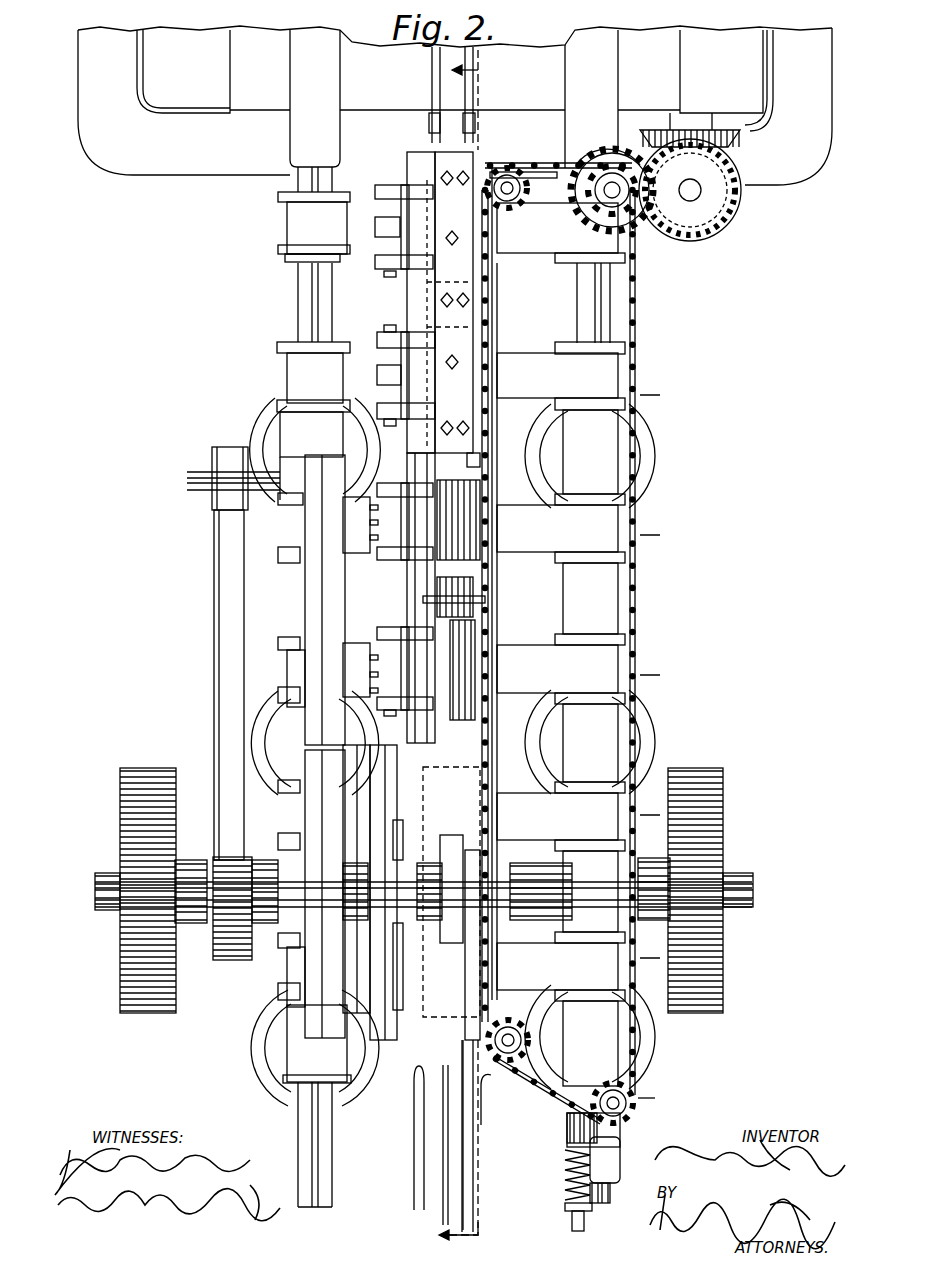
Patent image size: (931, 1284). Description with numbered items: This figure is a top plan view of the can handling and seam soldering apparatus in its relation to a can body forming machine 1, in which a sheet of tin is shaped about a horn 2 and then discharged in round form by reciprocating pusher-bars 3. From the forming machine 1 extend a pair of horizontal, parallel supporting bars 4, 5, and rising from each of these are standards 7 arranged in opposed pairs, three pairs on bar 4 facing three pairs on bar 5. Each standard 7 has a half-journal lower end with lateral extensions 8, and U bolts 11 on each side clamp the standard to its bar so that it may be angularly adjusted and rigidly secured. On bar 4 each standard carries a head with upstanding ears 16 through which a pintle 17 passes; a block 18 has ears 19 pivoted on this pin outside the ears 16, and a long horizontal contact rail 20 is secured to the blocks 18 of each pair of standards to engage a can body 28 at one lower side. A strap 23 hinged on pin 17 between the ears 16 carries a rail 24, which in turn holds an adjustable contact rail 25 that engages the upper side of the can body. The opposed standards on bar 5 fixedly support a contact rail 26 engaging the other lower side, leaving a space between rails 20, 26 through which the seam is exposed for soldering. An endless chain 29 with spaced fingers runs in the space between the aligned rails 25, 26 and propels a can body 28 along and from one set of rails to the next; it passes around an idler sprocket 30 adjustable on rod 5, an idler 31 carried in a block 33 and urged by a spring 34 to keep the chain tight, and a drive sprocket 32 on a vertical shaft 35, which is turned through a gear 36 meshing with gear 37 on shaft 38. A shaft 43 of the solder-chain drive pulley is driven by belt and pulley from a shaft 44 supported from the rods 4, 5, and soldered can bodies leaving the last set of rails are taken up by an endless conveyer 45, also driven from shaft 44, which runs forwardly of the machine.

The can body forming machine 1 is at (237, 162).
The horn 2 is at (450, 100).
The reciprocating pusher-bars 3 is at (403, 137).
The supporting bar 4 is at (307, 313).
The supporting bar 5 is at (598, 312).
The standard 7 is at (317, 227).
The lateral extension of half journal 8 is at (308, 260).
The U bolt 11 is at (305, 350).
The upstanding ears 16 is at (390, 245).
The pintle 17 is at (390, 327).
The block 18 is at (362, 612).
The ears of block 19 is at (407, 413).
The contact member or rail 20 is at (423, 602).
The strap 23 is at (393, 230).
The rail 24 is at (453, 317).
The adjustable contact member or rail 25 is at (317, 522).
The contact member or rail 26 is at (473, 463).
The can body 28 is at (463, 528).
The endless chain 29 is at (637, 623).
The idler sprocket 30 is at (522, 173).
The idler sprocket 31 is at (637, 1107).
The drive sprocket 32 is at (598, 203).
The block 33 is at (567, 1133).
The spring 34 is at (565, 1190).
The vertical shaft 35 is at (608, 185).
The gear 36 is at (620, 163).
The gear 37 is at (688, 213).
The shaft 38 is at (698, 193).
The shaft of hexagonal drive pulley 43 is at (212, 472).
The shaft 44 is at (110, 882).
The endless conveyer 45 is at (448, 1155).